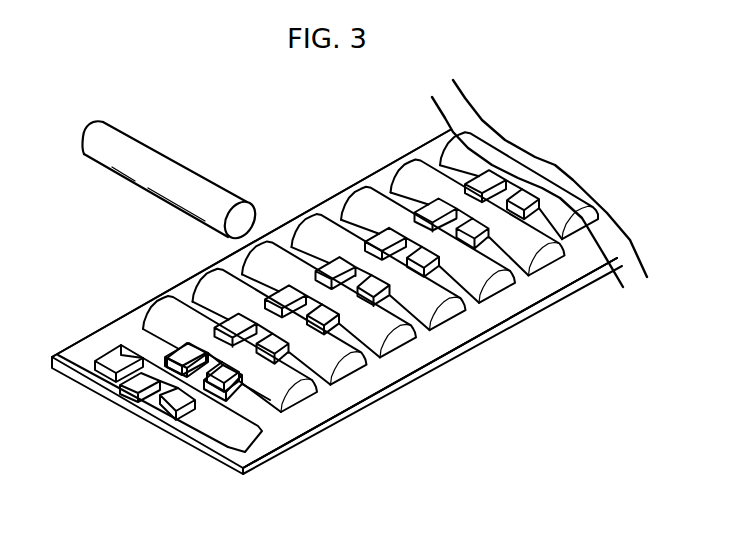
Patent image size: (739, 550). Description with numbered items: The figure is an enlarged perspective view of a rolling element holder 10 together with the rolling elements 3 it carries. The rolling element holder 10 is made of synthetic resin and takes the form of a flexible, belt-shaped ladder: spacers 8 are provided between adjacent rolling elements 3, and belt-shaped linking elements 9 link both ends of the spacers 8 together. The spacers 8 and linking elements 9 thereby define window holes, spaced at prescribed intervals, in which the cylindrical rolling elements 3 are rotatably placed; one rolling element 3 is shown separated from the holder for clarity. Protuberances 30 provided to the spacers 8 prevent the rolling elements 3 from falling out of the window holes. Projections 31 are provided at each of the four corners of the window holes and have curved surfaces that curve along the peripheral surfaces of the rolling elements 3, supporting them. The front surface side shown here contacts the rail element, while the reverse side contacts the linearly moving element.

The rolling element 3 is at (174, 182).
The spacer 8 is at (192, 430).
The linking element 9 is at (407, 360).
The rolling element holder 10 is at (333, 410).
The protuberance 30 is at (130, 393).
The projection 31 is at (123, 352).